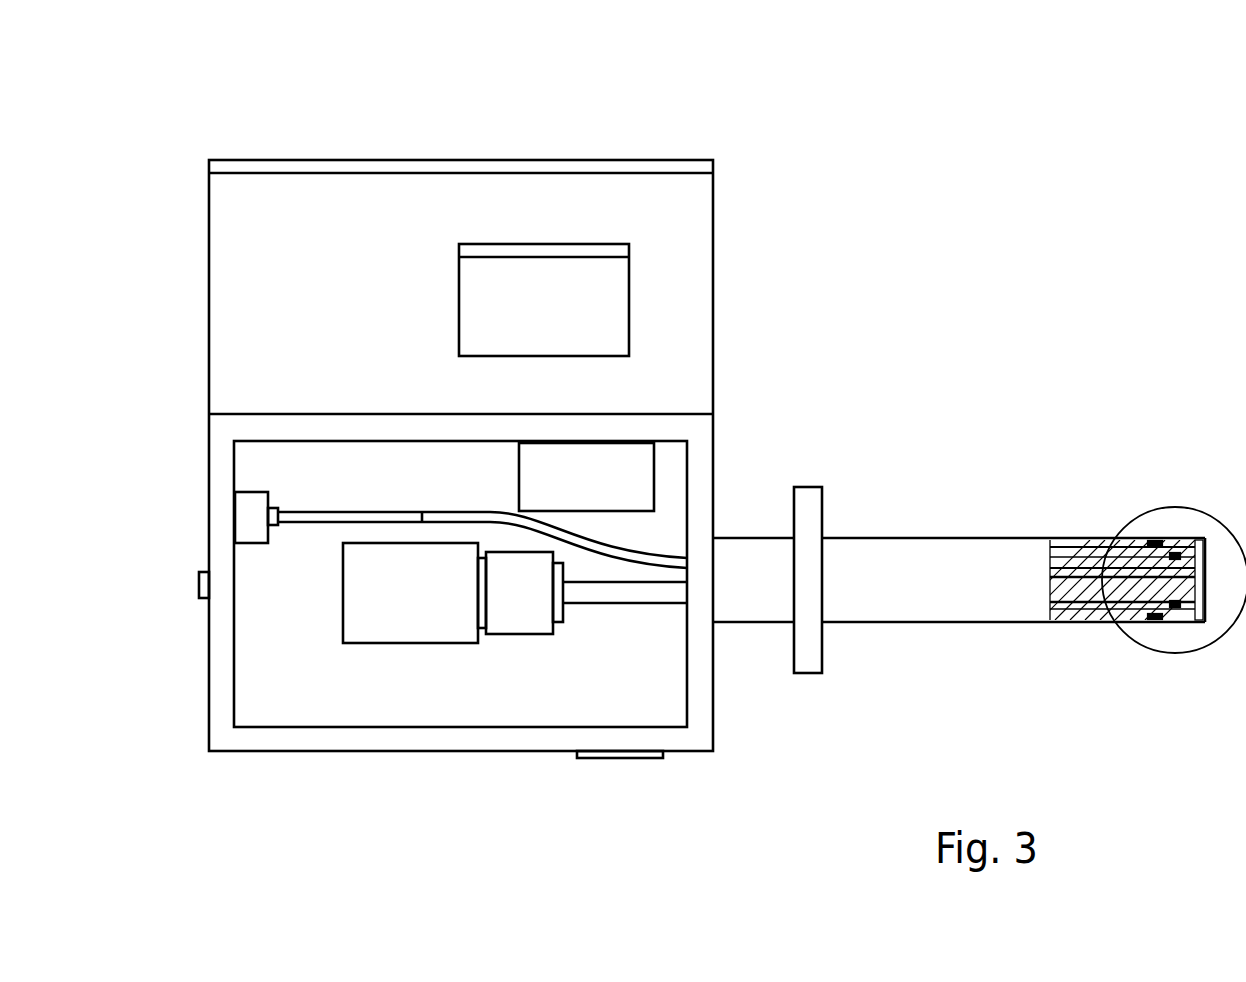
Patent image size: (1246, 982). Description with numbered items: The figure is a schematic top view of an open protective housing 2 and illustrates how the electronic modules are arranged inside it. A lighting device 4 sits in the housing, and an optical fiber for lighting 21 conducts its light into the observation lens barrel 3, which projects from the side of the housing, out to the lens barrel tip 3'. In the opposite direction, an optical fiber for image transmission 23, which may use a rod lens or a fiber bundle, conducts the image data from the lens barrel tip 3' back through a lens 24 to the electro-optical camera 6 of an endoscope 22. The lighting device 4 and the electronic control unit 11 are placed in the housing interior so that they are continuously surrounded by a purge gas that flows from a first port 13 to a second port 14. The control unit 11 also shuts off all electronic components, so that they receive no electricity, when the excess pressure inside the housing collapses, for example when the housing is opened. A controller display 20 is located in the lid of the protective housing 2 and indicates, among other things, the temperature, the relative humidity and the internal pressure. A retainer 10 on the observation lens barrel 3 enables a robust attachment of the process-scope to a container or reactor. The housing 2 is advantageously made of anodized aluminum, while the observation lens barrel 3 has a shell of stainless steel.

The housing 2 is at (687, 732).
The observation lens barrel 3 is at (959, 501).
The lens barrel tip 3' is at (1174, 517).
The lighting device 4 is at (255, 518).
The electro-optical camera 6 is at (410, 587).
The retainer 10 is at (806, 503).
The electronic control unit 11 is at (630, 483).
The first port 13 is at (200, 585).
The second port 14 is at (618, 758).
The controller display 20 is at (555, 290).
The optical fiber for lighting 21 is at (345, 516).
The endoscope 22 is at (658, 618).
The optical fiber for image transmission 23 is at (1087, 590).
The lens 24 is at (518, 590).